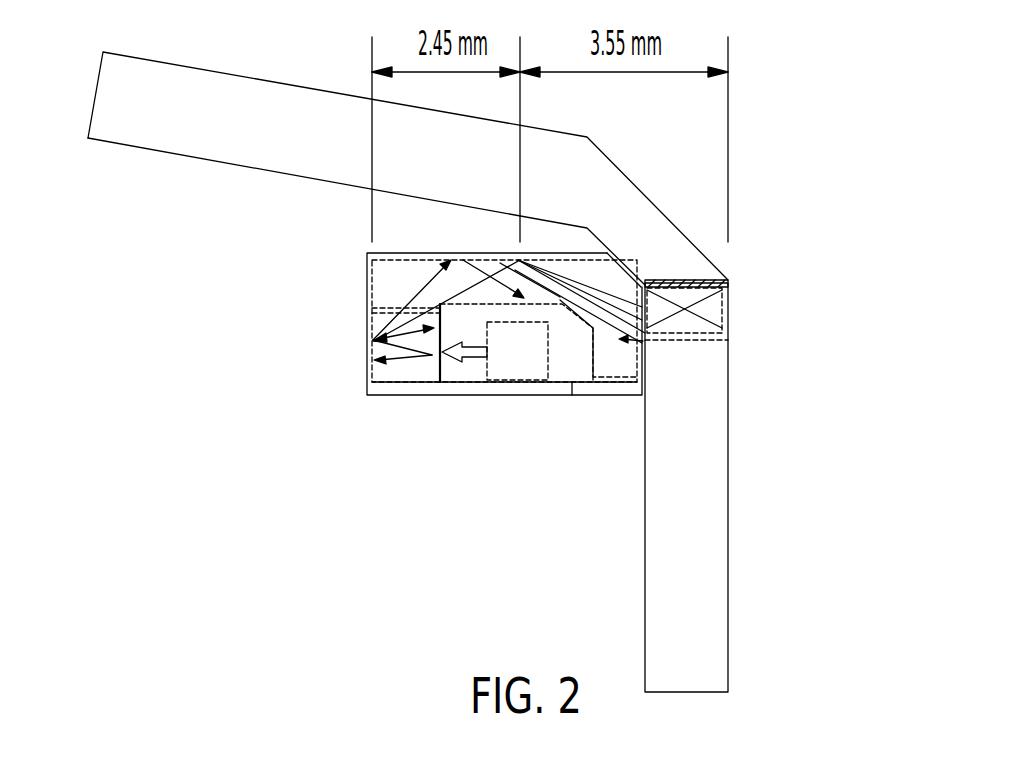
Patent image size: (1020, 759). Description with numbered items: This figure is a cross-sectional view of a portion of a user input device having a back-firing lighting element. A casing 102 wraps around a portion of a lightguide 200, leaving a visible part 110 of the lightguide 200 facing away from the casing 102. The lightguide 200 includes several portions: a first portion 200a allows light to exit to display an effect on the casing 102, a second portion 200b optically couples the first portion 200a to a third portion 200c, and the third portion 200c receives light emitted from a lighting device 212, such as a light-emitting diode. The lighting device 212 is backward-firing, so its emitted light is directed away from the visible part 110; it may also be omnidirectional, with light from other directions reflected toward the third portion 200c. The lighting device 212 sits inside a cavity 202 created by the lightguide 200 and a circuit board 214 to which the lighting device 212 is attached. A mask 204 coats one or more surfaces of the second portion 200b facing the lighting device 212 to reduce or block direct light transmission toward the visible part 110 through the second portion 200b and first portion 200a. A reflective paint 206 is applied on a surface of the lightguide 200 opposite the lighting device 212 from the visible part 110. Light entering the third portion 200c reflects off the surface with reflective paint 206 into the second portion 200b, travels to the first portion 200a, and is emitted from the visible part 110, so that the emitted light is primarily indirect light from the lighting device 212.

The casing 102 is at (200, 102).
The visible part 110 is at (760, 295).
The lightguide 200 is at (606, 293).
The first portion 200a is at (690, 292).
The second portion 200b is at (645, 340).
The third portion 200c is at (398, 362).
The cavity 202 is at (564, 360).
The mask 204 is at (614, 358).
The reflective paint 206 is at (356, 297).
The lighting device 212 is at (504, 360).
The circuit board 214 is at (439, 365).